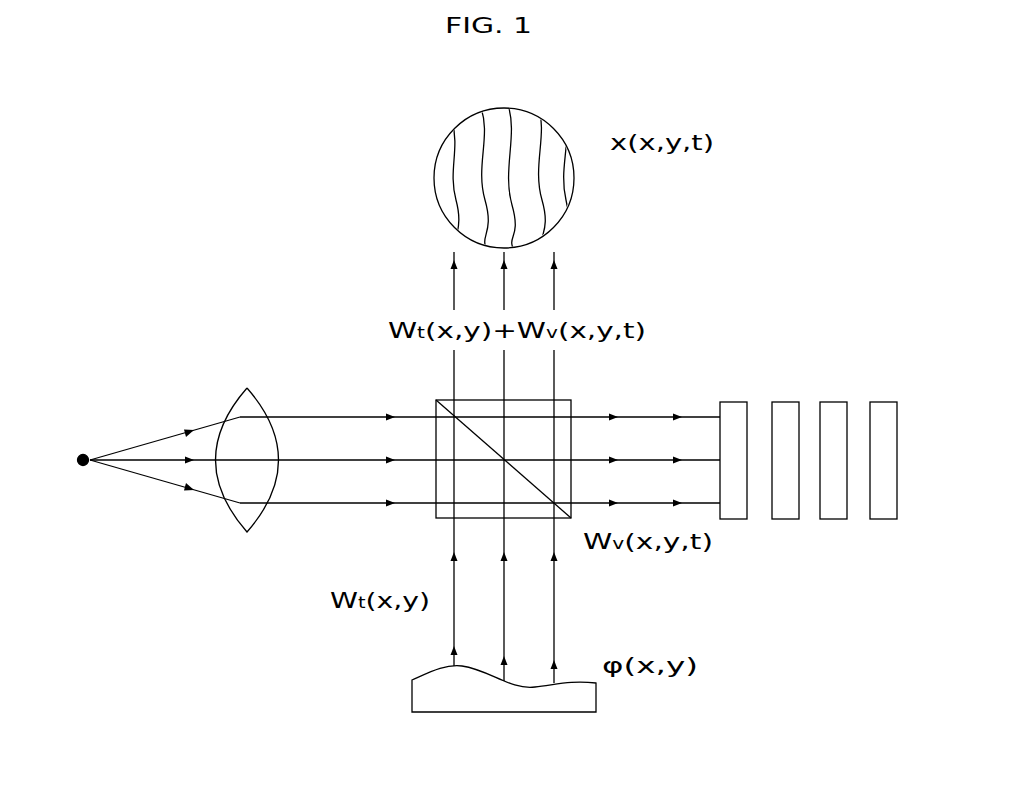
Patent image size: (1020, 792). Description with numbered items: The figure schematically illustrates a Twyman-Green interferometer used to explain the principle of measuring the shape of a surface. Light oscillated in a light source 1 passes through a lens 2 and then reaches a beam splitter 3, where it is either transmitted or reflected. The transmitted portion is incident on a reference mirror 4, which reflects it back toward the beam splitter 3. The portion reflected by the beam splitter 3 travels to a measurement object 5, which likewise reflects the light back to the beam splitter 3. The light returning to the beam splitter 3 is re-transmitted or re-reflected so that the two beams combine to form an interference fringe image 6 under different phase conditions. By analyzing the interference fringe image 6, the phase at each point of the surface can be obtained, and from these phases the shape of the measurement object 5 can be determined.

The light source 1 is at (83, 453).
The lens 2 is at (233, 397).
The beam splitter 3 is at (441, 401).
The reference mirror 4 is at (734, 401).
The measurement object 5 is at (596, 696).
The interference fringe image 6 is at (574, 203).